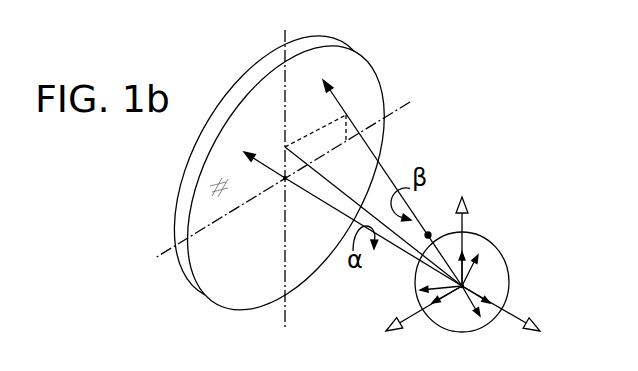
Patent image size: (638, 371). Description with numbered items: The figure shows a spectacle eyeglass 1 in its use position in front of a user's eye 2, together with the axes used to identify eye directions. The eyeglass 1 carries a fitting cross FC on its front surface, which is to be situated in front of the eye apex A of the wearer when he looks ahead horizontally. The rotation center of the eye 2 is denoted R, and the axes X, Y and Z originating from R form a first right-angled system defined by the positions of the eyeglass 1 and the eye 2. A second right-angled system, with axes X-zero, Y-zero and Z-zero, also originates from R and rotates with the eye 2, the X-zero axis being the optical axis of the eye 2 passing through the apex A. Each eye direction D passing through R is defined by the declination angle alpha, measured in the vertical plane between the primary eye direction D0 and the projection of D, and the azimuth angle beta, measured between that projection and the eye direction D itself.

The spectacle eyeglass 1 is at (240, 297).
The user's eye 2 is at (508, 278).
The fitting cross FC is at (279, 187).
The rotation center of the eye R is at (463, 259).
The eye apex A is at (430, 231).
The eye direction D is at (392, 182).
The primary eye direction D0 is at (264, 152).